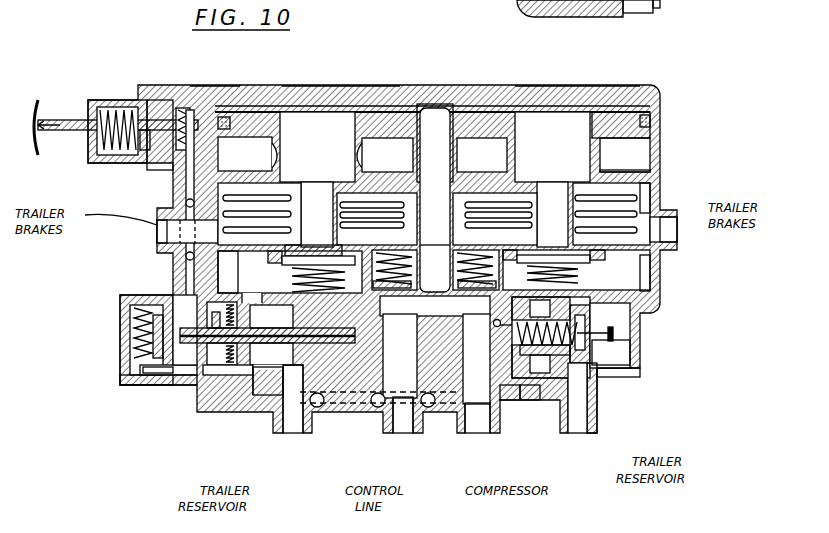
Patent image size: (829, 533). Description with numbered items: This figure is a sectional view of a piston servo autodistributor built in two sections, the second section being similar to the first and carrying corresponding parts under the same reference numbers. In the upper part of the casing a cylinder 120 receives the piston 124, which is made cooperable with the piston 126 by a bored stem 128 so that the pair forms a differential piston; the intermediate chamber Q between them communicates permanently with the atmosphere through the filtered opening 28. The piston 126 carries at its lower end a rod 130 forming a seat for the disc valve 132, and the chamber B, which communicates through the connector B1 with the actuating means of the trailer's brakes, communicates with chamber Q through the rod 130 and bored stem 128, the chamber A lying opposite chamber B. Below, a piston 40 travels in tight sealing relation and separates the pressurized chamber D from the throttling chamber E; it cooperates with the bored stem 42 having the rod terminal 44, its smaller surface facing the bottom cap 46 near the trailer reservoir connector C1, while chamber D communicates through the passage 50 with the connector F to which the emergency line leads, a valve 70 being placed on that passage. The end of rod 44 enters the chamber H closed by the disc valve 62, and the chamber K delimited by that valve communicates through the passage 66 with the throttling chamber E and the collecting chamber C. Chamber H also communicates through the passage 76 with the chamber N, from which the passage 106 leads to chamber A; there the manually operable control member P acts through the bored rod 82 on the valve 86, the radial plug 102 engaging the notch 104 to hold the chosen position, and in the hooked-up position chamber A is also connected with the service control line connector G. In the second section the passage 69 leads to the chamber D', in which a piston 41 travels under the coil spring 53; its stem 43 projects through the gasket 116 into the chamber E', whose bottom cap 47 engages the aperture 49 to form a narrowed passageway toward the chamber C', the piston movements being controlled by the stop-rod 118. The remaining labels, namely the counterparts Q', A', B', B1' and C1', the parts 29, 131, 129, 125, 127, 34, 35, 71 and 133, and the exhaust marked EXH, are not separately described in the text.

The control member P is at (42, 100).
The notch 104 is at (94, 108).
The radial plug 102 is at (84, 150).
The bored rod 82 is at (160, 100).
The valve 86 is at (187, 108).
The passage 106 is at (212, 92).
The chamber N is at (143, 152).
The passage 76 is at (185, 188).
The piston 124 is at (227, 117).
The cylinder 120 is at (225, 160).
The bored stem 128 is at (285, 162).
The chamber A is at (341, 71).
The intermediate chamber Q is at (387, 111).
The exhaust valve 29 is at (436, 140).
The chamber Q' is at (484, 111).
The piston rod 131 is at (554, 188).
The piston section A' is at (577, 71).
The piston head 129 is at (608, 120).
The seal ring 125 is at (660, 122).
The piston 127 is at (637, 176).
The rod 130 is at (318, 186).
The piston 126 is at (192, 233).
The connector B1 is at (139, 235).
The chamber B is at (434, 214).
The opening 28 is at (435, 200).
The stem shoulder 34 is at (426, 238).
The port passage 35 is at (645, 218).
The spring chamber B' is at (671, 191).
The trailer brakes port B1' is at (684, 235).
The collecting chamber C is at (188, 272).
The disc valve 132 is at (280, 265).
The valve 70 is at (431, 324).
The chamber 71 is at (476, 327).
The spring 133 is at (598, 264).
The chamber C' is at (672, 273).
The disc valve 62 is at (128, 300).
The chamber K is at (128, 342).
The passage 66 is at (135, 386).
The chamber H is at (180, 318).
The pressurized chamber D is at (290, 277).
The bottom cap 46 is at (271, 335).
The bored stem 42 is at (356, 344).
The throttling chamber E is at (243, 408).
The piston 40 is at (230, 376).
The rod terminal 44 is at (216, 332).
The trailer reservoir connector C1 is at (290, 419).
The passage 50 is at (352, 400).
The service control line connector G is at (403, 420).
The connector F is at (478, 422).
The passage 69 is at (511, 402).
The piston 41 is at (529, 402).
The chamber D' is at (551, 364).
The coil spring 53 is at (525, 336).
The stem 43 is at (520, 368).
The exhaust EXH is at (496, 330).
The aperture 49 is at (606, 324).
The stop-rod 118 is at (614, 336).
The chamber E' is at (628, 358).
The bottom cap 47 is at (618, 378).
The gasket 116 is at (595, 395).
The trailer reservoir port C1' is at (589, 417).